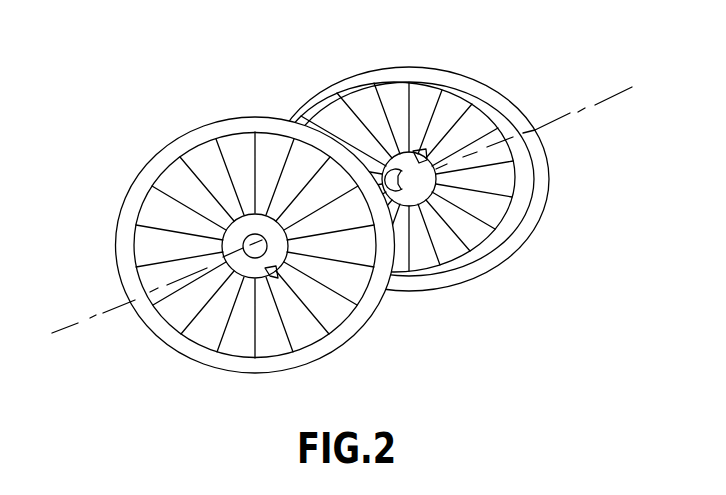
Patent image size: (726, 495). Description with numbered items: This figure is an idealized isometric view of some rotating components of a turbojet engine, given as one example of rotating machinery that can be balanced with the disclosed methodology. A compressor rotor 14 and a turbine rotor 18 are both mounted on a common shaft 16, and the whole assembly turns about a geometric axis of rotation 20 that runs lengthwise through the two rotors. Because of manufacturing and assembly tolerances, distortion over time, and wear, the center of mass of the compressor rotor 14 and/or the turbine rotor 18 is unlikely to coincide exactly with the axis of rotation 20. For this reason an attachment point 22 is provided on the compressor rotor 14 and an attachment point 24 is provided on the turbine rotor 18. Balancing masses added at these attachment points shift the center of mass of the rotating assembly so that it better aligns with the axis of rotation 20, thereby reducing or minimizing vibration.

The compressor rotor 14 is at (330, 358).
The shaft 16 is at (463, 248).
The turbine rotor 18 is at (548, 177).
The axis of rotation 20 is at (602, 102).
The attachment point 22 is at (272, 277).
The attachment point 24 is at (418, 152).